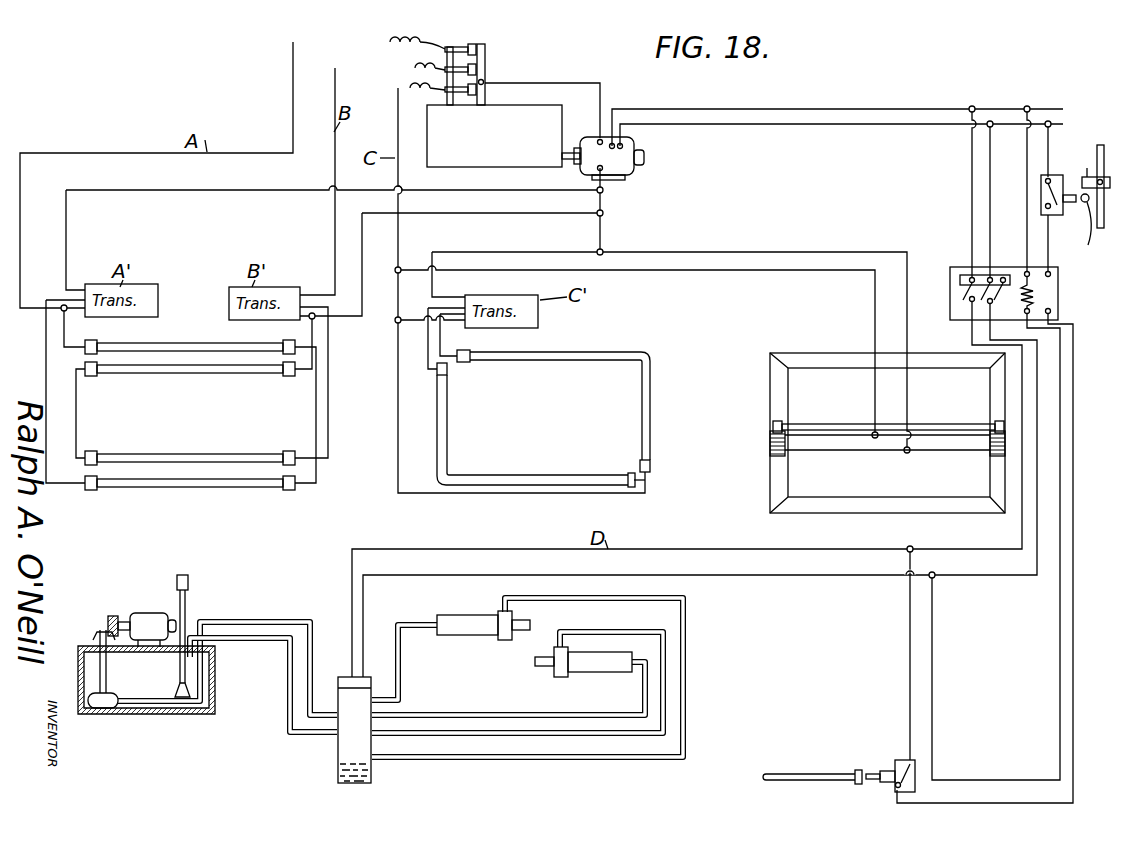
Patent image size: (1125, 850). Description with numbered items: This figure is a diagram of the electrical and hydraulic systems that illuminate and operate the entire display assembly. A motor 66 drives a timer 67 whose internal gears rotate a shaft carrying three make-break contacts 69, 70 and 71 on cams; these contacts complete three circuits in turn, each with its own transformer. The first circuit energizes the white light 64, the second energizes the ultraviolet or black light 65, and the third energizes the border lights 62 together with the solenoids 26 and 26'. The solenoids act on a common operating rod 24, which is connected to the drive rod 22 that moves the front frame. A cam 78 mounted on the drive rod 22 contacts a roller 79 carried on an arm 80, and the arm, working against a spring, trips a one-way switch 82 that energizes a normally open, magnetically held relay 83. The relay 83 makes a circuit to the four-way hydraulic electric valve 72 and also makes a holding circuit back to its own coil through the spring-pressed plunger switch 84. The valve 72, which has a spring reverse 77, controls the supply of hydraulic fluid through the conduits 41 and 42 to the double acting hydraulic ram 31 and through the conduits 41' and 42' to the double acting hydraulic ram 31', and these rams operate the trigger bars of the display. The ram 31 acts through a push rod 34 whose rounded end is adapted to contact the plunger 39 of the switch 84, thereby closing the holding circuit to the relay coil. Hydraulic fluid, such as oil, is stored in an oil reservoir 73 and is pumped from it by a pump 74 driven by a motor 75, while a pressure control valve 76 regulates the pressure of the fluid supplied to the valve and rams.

The make-break contact 69 is at (450, 46).
The make-break contact 70 is at (486, 60).
The make-break contact 71 is at (488, 102).
The timer 67 is at (452, 160).
The motor 66 is at (632, 175).
The white light 64 is at (192, 332).
The ultraviolet light 65 is at (201, 452).
The border lights 62 is at (605, 360).
The common operating rod 24 is at (827, 426).
The solenoid 26 is at (749, 449).
The solenoid 26' is at (955, 460).
The relay 83 is at (955, 276).
The one-way switch 82 is at (1040, 188).
The arm 80 is at (1075, 205).
The roller 79 is at (1076, 234).
The drive rod 22 is at (1103, 143).
The cam 78 is at (1093, 160).
The oil line 42 is at (404, 648).
The oil line 41 is at (527, 669).
The oil line 41' is at (517, 672).
The oil line 42' is at (508, 688).
The double acting hydraulic ram 31 is at (483, 615).
The double acting hydraulic ram 31' is at (583, 678).
The four-way hydraulic electric valve 72 is at (345, 677).
The spring reverse 77 is at (338, 777).
The oil reservoir 73 is at (78, 658).
The motor 75 is at (148, 612).
The pump 74 is at (106, 697).
The pressure control valve 76 is at (188, 598).
The spring-pressed plunger switch 84 is at (903, 760).
The plunger 39 is at (855, 772).
The push rod 34 is at (770, 760).